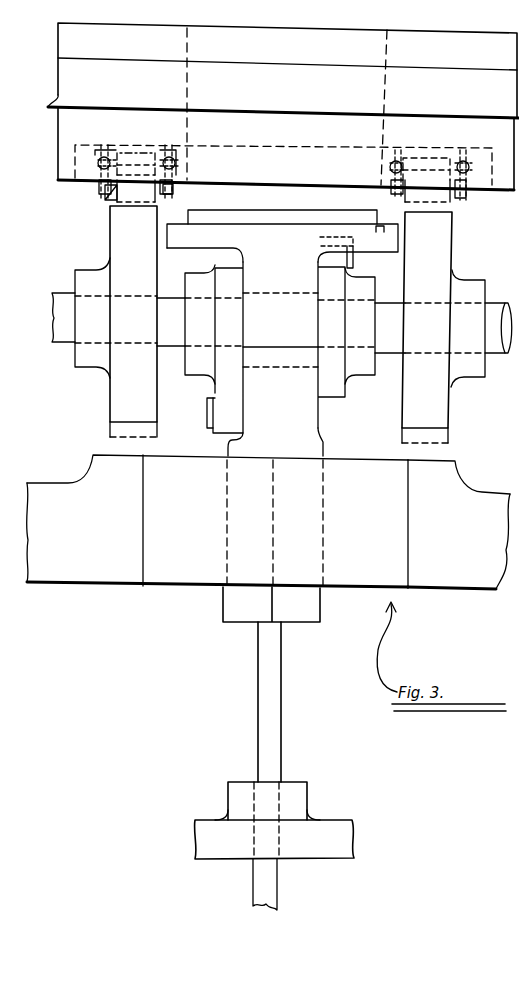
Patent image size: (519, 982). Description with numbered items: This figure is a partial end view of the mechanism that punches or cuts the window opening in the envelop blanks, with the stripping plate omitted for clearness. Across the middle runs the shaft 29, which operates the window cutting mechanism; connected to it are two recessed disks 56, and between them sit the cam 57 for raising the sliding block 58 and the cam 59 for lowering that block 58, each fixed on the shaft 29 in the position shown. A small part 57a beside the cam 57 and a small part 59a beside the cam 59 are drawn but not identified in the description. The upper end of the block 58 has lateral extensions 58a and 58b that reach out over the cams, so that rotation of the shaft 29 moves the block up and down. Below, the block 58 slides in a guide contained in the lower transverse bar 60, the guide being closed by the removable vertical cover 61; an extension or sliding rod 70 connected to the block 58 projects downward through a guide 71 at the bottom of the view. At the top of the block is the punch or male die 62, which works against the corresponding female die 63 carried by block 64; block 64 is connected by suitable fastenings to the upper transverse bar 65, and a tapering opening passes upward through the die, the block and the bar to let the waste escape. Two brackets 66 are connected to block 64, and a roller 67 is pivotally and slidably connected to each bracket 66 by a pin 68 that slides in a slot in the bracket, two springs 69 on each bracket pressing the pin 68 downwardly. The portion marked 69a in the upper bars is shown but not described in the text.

The shaft 29 is at (282, 330).
The recessed disks 56 is at (280, 324).
The cam 57 is at (346, 345).
The key 57a is at (322, 244).
The sliding block 58 is at (272, 428).
The lateral extension 58a is at (282, 243).
The lateral extension 58b is at (381, 231).
The cam 59 is at (214, 347).
The cap 59a is at (237, 407).
The lower transverse bar 60 is at (459, 524).
The removable vertical cover 61 is at (217, 521).
The punch 62 is at (268, 222).
The female die 63 is at (405, 168).
The block 64 is at (286, 148).
The upper transverse bar 65 is at (283, 70).
The brackets 66 is at (140, 150).
The roller 67 is at (136, 177).
The pin 68 is at (174, 189).
The springs 69 is at (100, 158).
The section lines 69a is at (287, 106).
The sliding rod 70 is at (273, 690).
The guide 71 is at (274, 846).